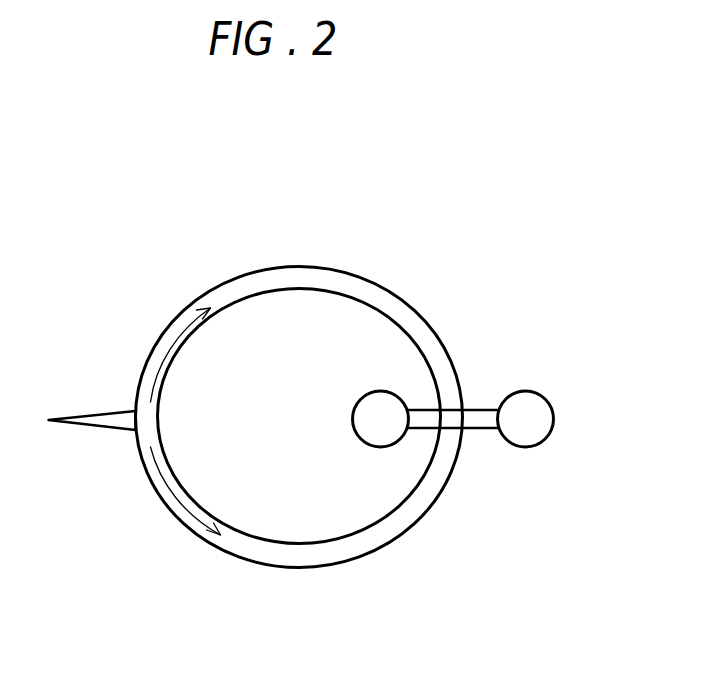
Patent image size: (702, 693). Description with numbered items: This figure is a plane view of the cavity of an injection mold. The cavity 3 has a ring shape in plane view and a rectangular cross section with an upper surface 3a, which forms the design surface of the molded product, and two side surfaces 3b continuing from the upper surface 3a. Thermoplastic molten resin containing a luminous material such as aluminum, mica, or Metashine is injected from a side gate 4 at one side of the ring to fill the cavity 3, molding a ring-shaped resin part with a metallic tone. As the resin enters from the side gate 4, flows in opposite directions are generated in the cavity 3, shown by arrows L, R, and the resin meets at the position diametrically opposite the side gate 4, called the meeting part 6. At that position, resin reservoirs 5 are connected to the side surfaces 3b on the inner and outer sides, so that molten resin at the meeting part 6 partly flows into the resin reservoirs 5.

The cavity 3 is at (317, 398).
The upper surface 3a is at (418, 323).
The side surface 3b is at (383, 283).
The side gate 4 is at (100, 432).
The resin reservoir 5 is at (378, 438).
The meeting part 6 is at (451, 416).
The arrow L is at (170, 342).
The arrow R is at (170, 493).